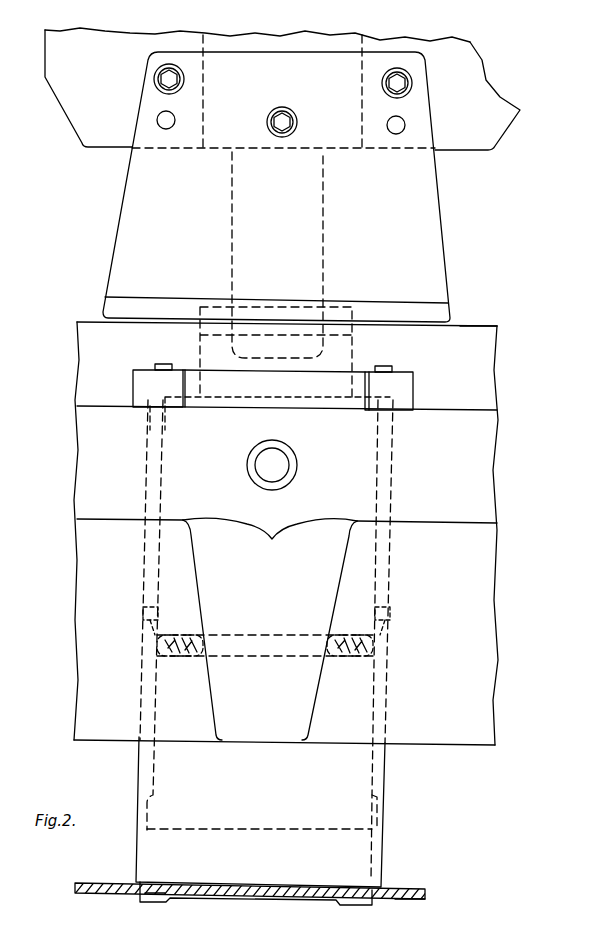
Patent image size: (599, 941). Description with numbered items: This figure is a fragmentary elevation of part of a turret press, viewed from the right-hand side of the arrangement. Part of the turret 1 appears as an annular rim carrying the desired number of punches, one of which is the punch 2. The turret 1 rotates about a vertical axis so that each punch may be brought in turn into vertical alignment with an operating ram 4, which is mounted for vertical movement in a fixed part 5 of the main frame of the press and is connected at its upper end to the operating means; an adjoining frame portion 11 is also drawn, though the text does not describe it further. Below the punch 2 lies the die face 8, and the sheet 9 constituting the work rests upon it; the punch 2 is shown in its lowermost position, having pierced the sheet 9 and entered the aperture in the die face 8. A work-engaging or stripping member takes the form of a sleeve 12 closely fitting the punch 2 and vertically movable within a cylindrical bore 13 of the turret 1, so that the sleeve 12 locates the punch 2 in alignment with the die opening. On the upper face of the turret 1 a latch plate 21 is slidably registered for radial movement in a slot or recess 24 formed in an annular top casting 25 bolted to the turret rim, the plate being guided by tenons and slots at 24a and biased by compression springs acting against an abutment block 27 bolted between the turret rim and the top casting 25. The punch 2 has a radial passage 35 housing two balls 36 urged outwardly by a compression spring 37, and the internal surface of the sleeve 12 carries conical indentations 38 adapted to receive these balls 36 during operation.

The turret 1 is at (465, 465).
The punch 2 is at (158, 897).
The operating ram 4 is at (323, 245).
The fixed part of the main frame 5 is at (480, 140).
The die face 8 is at (400, 898).
The sheet 9 is at (96, 888).
The bracket plate 11 is at (435, 247).
The sleeve 12 is at (375, 771).
The cylindrical bore 13 is at (390, 710).
The latch plate 21 is at (143, 388).
The slot or recess 24 is at (183, 368).
The tenons and slots 24a is at (163, 363).
The annular top casting 25 is at (470, 345).
The abutment block 27 is at (318, 398).
The radial passage 35 is at (190, 659).
The ball 36 is at (171, 637).
The compression spring 37 is at (345, 659).
The conical indentation 38 is at (143, 606).